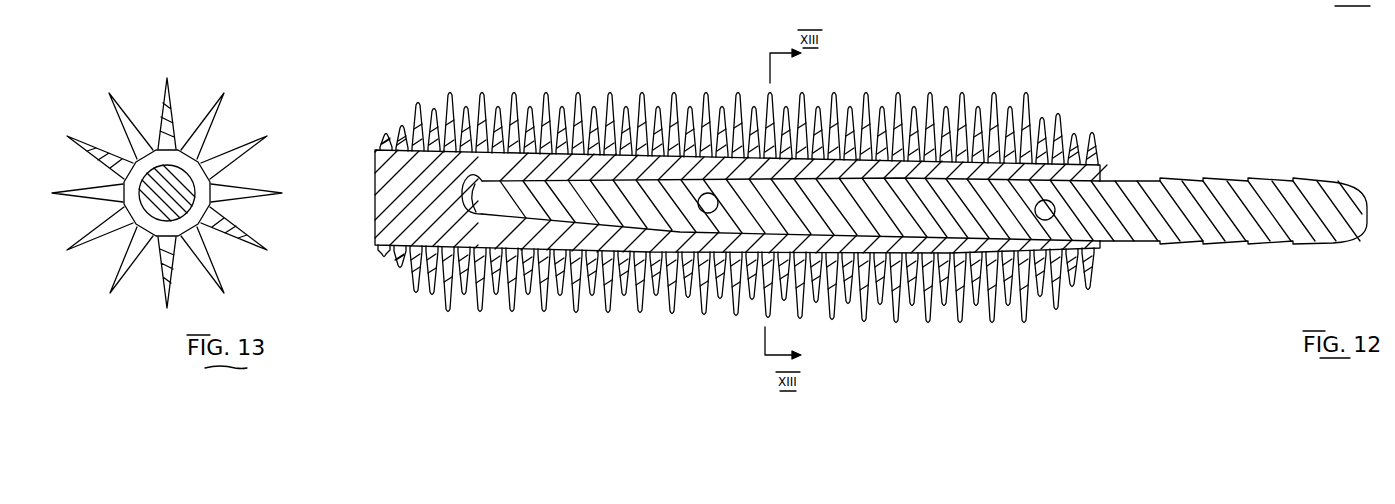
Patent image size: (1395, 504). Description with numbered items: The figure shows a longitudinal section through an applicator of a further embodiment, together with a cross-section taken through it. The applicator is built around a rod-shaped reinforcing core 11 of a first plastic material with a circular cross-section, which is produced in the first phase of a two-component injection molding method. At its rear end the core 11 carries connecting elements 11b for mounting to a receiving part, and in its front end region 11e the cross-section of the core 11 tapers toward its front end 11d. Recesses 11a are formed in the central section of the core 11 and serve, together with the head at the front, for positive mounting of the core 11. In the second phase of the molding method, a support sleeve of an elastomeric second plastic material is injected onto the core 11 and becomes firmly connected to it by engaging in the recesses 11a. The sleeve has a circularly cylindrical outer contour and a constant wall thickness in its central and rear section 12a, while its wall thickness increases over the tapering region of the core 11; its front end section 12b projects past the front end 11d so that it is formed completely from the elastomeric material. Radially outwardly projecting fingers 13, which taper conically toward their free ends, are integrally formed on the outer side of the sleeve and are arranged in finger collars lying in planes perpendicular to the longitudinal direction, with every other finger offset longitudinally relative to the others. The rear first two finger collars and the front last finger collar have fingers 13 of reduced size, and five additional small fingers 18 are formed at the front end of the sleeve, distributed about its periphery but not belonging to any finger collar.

In FIG. 12, the reinforcing core 11 is at (1131, 203).
In FIG. 13, the reinforcing core 11 is at (108, 200).
In FIG. 12, the recesses 11a is at (700, 212).
In FIG. 12, the connecting elements 11b is at (1260, 177).
In FIG. 12, the front end 11d is at (463, 202).
In FIG. 12, the front end region 11e is at (476, 216).
In FIG. 12, the central and rear section 12a is at (888, 300).
In FIG. 13, the central and rear section 12a is at (207, 202).
In FIG. 12, the front end section 12b is at (428, 212).
In FIG. 12, the fingers 13 is at (845, 275).
In FIG. 13, the fingers 13 is at (212, 250).
In FIG. 12, the small fingers 18 is at (383, 135).